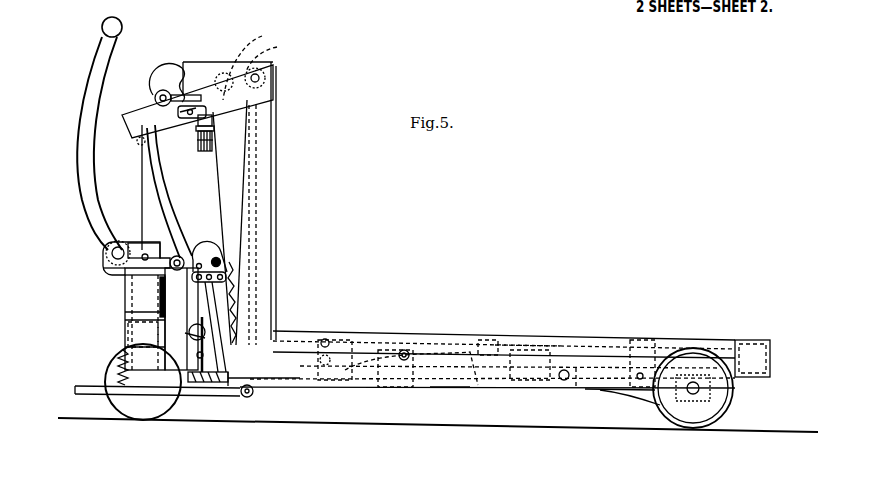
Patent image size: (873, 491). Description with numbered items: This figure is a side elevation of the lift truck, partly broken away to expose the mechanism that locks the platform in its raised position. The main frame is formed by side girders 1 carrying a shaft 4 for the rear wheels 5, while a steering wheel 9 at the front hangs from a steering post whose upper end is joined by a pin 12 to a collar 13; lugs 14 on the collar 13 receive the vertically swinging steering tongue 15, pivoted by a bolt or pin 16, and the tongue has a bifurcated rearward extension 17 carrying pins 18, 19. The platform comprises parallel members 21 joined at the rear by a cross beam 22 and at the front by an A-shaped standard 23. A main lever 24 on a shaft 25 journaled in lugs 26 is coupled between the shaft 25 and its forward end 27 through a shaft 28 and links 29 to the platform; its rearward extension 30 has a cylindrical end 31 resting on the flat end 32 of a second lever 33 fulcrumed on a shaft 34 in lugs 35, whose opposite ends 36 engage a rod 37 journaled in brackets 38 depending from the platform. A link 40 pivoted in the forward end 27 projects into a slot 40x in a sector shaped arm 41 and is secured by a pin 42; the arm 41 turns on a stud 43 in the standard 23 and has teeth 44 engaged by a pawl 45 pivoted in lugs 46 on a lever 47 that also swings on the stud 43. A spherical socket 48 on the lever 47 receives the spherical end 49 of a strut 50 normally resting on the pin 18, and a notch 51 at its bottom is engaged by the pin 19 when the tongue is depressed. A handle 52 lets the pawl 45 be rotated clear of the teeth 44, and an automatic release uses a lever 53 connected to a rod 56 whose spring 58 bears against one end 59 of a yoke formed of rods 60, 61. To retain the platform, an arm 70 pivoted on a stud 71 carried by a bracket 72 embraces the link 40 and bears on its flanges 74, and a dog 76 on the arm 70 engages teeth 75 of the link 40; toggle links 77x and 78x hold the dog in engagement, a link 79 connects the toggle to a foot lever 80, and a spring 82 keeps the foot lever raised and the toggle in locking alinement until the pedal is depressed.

The side girder 1 is at (447, 388).
The shaft 4 is at (700, 388).
The rear wheel 5 is at (732, 410).
The steering wheel 9 is at (152, 418).
The pin 12 is at (142, 277).
The collar 13 is at (108, 268).
The lugs 14 is at (104, 258).
The steering tongue 15 is at (80, 172).
The bolt or pin 16 is at (112, 250).
The bifurcated rearward extension 17 is at (137, 245).
The pin 18 is at (146, 254).
The pin 19 is at (178, 257).
The platform member 21 is at (530, 342).
The cross beam 22 is at (751, 340).
The A-shaped standard 23 is at (277, 162).
The main lever 24 is at (365, 350).
The shaft 25 is at (407, 352).
The brackets or lugs 26 is at (384, 380).
The forward end 27 is at (268, 380).
The shaft 28 is at (328, 340).
The links 29 is at (345, 340).
The rearward extension 30 is at (478, 340).
The cylindrical end 31 is at (500, 343).
The end 32 is at (474, 382).
The second lever 33 is at (526, 382).
The shaft 34 is at (561, 379).
The lugs 35 is at (576, 388).
The opposite ends 36 is at (610, 382).
The shaft or rod 37 is at (640, 391).
The brackets 38 is at (634, 342).
The link 40 is at (218, 186).
The slot 40x is at (272, 52).
The sector shaped arm 41 is at (212, 65).
The pin 42 is at (246, 59).
The stud 43 is at (259, 78).
The teeth or notches 44 is at (182, 66).
The pawl 45 is at (163, 78).
The lugs 46 is at (158, 96).
The lever 47 is at (128, 114).
The spherical socket 48 is at (138, 142).
The spherical end 49 is at (145, 148).
The strut 50 is at (142, 170).
The notch 51 is at (167, 232).
The handle 52 is at (183, 115).
The lever 53 is at (184, 119).
The rod 56 is at (212, 117).
The spring 58 is at (204, 152).
The yoke end 59 is at (214, 128).
The rod 60 is at (199, 141).
The rod 61 is at (216, 143).
The arm 70 is at (197, 299).
The stud 71 is at (194, 330).
The bracket 72 is at (192, 383).
The flanges 74 is at (250, 300).
The teeth 75 is at (226, 280).
The dog 76 is at (222, 263).
The toggle link 77x is at (199, 263).
The toggle link 78x is at (231, 288).
The link 79 is at (187, 333).
The foot lever 80 is at (92, 389).
The spring 82 is at (120, 362).